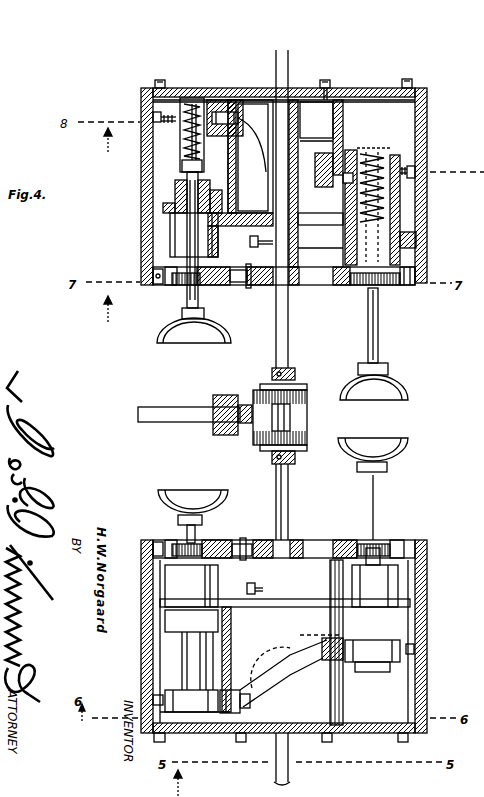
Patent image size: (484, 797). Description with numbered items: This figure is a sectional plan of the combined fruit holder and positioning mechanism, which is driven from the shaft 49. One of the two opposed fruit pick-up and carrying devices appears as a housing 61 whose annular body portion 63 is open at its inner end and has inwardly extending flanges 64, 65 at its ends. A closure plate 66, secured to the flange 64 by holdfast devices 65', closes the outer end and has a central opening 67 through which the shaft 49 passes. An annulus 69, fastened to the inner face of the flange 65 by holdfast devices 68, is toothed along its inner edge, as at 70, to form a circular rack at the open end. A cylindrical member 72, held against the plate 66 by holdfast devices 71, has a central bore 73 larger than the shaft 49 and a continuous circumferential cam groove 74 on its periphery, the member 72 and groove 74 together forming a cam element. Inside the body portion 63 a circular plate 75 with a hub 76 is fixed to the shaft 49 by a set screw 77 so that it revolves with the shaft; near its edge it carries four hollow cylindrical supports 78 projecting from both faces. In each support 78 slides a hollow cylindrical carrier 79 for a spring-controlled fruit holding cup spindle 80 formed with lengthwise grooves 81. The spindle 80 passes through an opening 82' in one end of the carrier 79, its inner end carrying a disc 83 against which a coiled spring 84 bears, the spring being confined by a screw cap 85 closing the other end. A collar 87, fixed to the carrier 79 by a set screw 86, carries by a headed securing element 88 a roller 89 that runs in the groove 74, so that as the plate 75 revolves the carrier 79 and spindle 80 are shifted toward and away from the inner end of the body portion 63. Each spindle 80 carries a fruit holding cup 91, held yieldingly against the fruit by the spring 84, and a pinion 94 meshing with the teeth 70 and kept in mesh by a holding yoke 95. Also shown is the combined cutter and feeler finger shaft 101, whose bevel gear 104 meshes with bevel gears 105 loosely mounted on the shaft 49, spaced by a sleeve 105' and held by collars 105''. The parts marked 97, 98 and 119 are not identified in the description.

The shaft 49 is at (289, 499).
The housing 61 is at (412, 200).
The annular body portion 63 is at (427, 138).
The flange 64 is at (406, 103).
The flange 65 is at (423, 411).
The holdfast devices 65' is at (295, 410).
The closure plate 66 is at (372, 89).
The opening 67 is at (289, 76).
The holdfast devices 68 is at (168, 286).
The annulus 69 is at (153, 282).
The teeth 70 is at (176, 286).
The holdfast devices 71 is at (330, 82).
The cylindrical member 72 is at (344, 119).
The central bore 73 is at (298, 131).
The cam groove 74 is at (322, 149).
The circular plate 75 is at (306, 228).
The hub 76 is at (304, 249).
The set screw 77 is at (250, 243).
The hollow cylindrical supports 78 is at (170, 235).
The hollow cylindrical carrier 79 is at (181, 163).
The fruit holding cup spindle 80 is at (187, 193).
The grooves 81 is at (187, 250).
The opening 82' is at (186, 198).
The disc 83 is at (182, 170).
The coiled spring 84 is at (180, 149).
The screw cap 85 is at (192, 98).
The set screw 86 is at (152, 117).
The collar 87 is at (170, 116).
The headed securing element 88 is at (240, 100).
The roller 89 is at (224, 100).
The fruit holding cup 91 is at (180, 332).
The pinion 94 is at (222, 286).
The holding yokes 95 is at (228, 270).
The central bearing 97 is at (300, 286).
The gear bolt 98 is at (250, 288).
The combined cutter and feeler finger shaft 101 is at (158, 422).
The bevel gear 104 is at (272, 376).
The bevel gears 105 is at (300, 406).
The sleeve 105' is at (305, 414).
The collars 105'' is at (309, 411).
The shaft coupling 119 is at (213, 398).